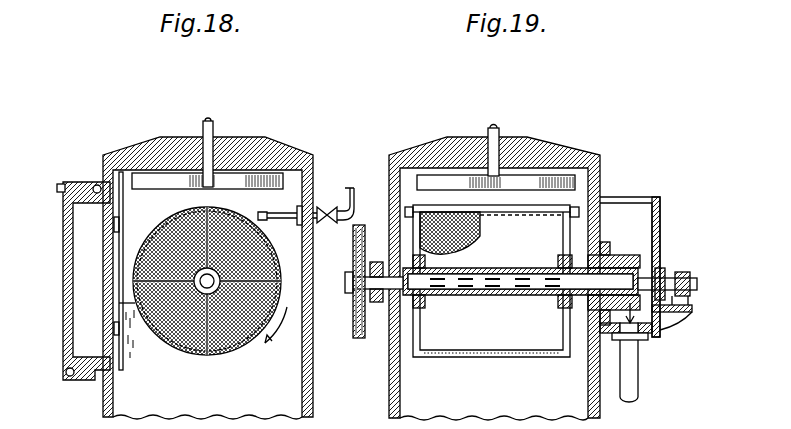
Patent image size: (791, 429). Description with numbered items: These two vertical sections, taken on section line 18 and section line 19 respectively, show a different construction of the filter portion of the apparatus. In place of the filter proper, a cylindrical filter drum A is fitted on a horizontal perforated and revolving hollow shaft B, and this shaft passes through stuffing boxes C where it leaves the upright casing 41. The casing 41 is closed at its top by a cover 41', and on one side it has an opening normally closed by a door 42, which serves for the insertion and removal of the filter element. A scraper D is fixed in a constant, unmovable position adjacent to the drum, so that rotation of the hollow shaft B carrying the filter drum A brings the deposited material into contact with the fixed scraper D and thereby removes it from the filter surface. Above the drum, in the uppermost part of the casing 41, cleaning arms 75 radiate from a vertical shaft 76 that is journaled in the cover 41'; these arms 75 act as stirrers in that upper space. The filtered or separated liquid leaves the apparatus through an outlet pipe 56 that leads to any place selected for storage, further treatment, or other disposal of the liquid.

In FIG. 18, the casing 41 is at (230, 278).
In FIG. 19, the casing 41 is at (470, 278).
In FIG. 19, the cover of the casing 41' is at (544, 123).
In FIG. 18, the door 42 is at (63, 254).
In FIG. 19, the outlet pipe 56 is at (638, 352).
In FIG. 18, the cleaning arms 75 is at (268, 175).
In FIG. 19, the cleaning arms 75 is at (565, 175).
In FIG. 18, the vertical shaft 76 is at (214, 128).
In FIG. 19, the vertical shaft 76 is at (488, 132).
In FIG. 19, the section line 18- 18 is at (493, 392).
In FIG. 18, the section line 19- 19 is at (207, 120).
In FIG. 18, the filter drum A is at (233, 355).
In FIG. 19, the filter drum A is at (550, 357).
In FIG. 18, the hollow shaft B is at (217, 275).
In FIG. 19, the hollow shaft B is at (533, 295).
In FIG. 19, the stuffing boxes C is at (378, 252).
In FIG. 18, the scraper D is at (118, 297).